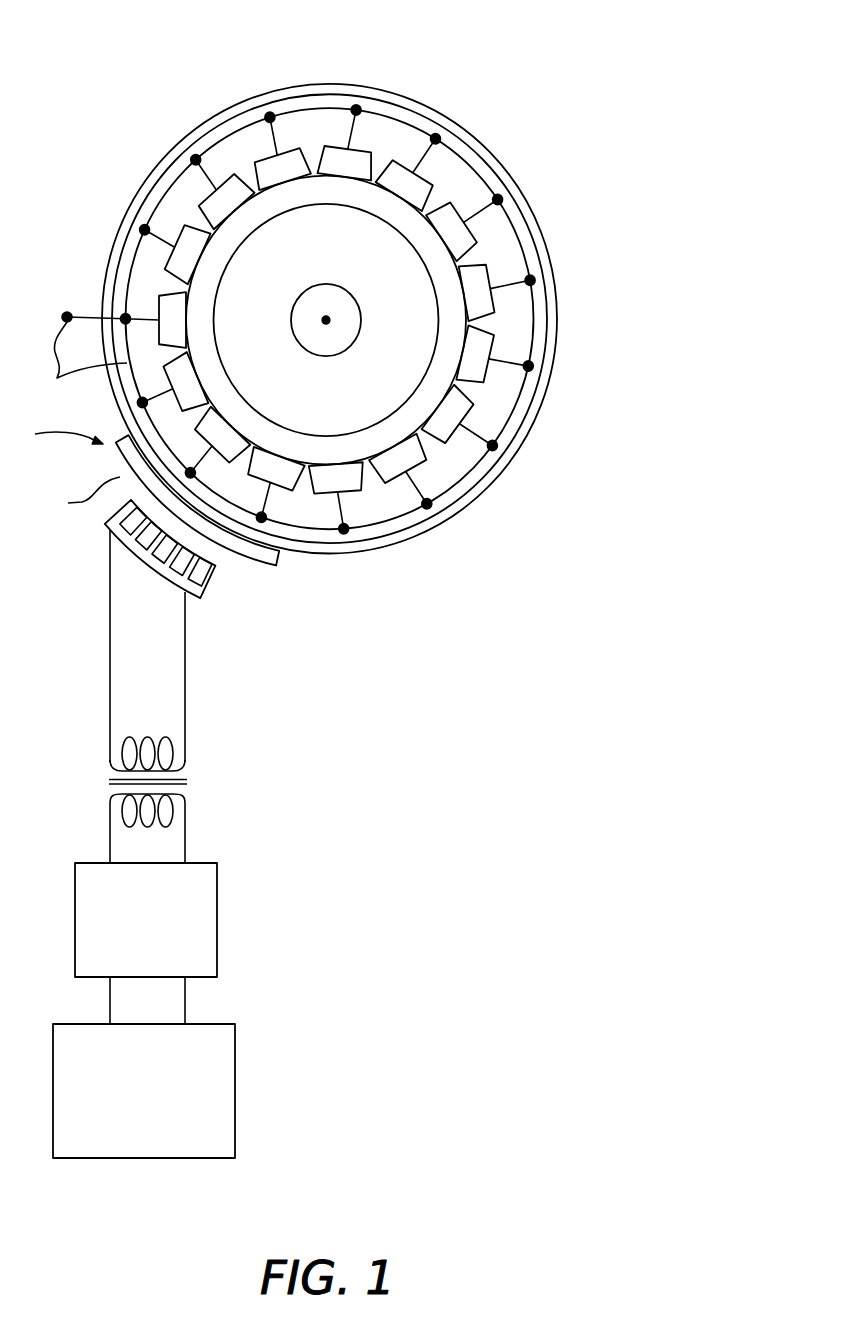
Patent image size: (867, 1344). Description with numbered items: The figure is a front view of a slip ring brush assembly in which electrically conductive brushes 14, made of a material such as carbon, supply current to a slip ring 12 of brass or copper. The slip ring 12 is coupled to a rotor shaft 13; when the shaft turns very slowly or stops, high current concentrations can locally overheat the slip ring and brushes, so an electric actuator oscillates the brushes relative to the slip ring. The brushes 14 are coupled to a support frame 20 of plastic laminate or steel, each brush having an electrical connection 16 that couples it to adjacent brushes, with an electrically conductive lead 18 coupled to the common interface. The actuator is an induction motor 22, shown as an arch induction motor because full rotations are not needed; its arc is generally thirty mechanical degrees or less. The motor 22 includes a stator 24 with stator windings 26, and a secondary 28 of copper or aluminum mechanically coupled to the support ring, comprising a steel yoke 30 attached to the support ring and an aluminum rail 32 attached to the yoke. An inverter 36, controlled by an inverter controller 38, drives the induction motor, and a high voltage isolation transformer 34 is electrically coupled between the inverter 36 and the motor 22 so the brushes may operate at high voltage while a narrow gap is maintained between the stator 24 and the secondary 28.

The slip ring 12 is at (326, 320).
The rotor shaft 13 is at (326, 320).
The electrically conductive brush 14 is at (327, 320).
The electrical connection 16 is at (328, 319).
The electrically conductive lead 18 is at (58, 379).
The support frame 20 is at (329, 319).
The induction motor 22 is at (254, 599).
The stator 24 is at (160, 549).
The stator windings 26 is at (166, 546).
The secondary 28 is at (54, 433).
The steel yoke 30 is at (197, 500).
The aluminum rail 32 is at (80, 498).
The high voltage isolation transformer 34 is at (207, 781).
The inverter 36 is at (220, 925).
The inverter controller 38 is at (236, 1072).